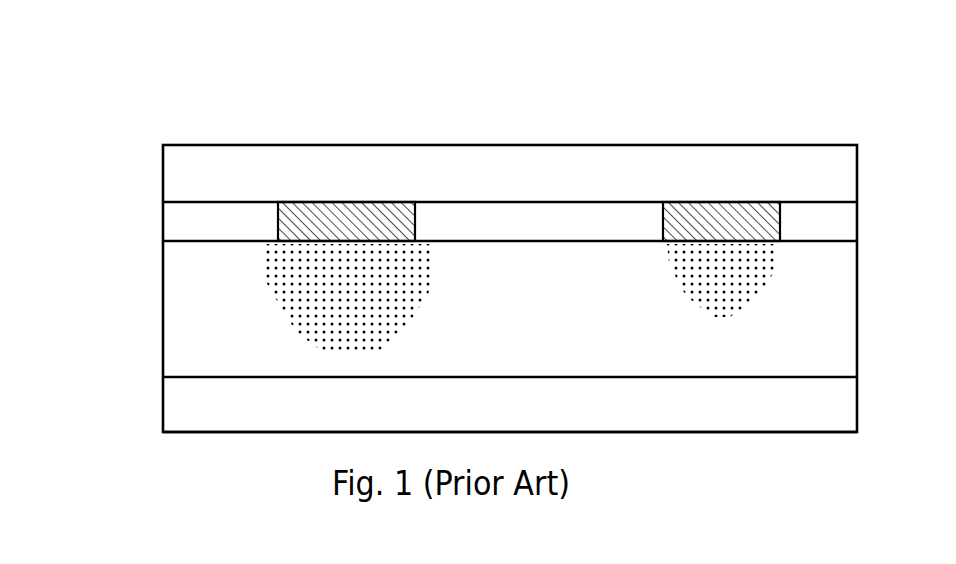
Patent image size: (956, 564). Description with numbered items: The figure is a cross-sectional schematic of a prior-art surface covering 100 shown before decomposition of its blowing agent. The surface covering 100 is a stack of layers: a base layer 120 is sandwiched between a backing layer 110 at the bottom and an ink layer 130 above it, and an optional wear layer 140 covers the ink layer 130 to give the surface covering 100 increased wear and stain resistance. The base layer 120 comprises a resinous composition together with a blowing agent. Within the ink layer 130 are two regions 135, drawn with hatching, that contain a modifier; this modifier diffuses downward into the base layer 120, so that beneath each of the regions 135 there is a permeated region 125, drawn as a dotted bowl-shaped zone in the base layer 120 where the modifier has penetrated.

The surface covering 100 is at (394, 68).
The backing layer 110 is at (163, 403).
The base layer 120 is at (163, 337).
The ink layer 130 is at (163, 230).
The wear layer 140 is at (163, 183).
The regions 135 is at (338, 202).
The permeated regions 125 is at (427, 292).